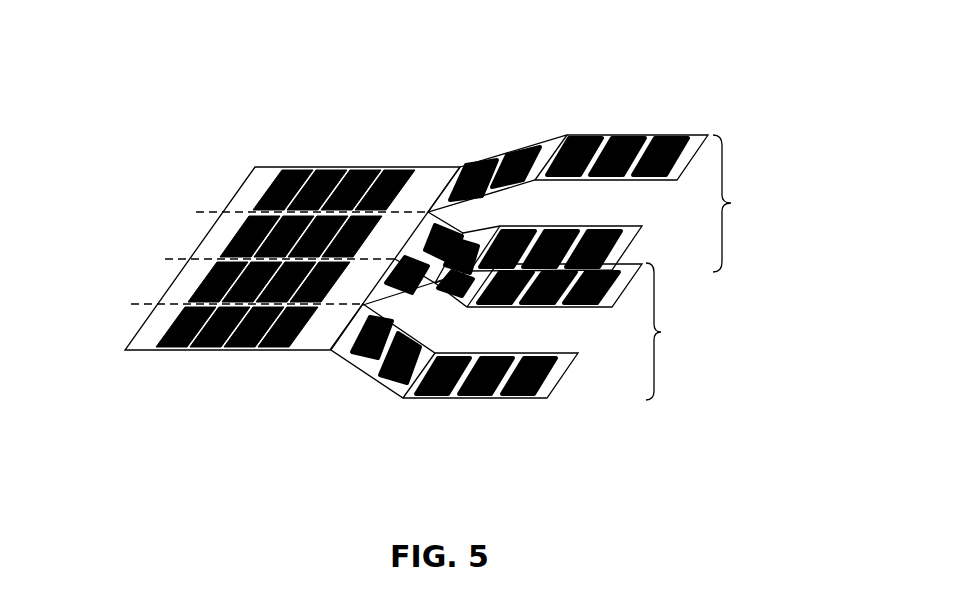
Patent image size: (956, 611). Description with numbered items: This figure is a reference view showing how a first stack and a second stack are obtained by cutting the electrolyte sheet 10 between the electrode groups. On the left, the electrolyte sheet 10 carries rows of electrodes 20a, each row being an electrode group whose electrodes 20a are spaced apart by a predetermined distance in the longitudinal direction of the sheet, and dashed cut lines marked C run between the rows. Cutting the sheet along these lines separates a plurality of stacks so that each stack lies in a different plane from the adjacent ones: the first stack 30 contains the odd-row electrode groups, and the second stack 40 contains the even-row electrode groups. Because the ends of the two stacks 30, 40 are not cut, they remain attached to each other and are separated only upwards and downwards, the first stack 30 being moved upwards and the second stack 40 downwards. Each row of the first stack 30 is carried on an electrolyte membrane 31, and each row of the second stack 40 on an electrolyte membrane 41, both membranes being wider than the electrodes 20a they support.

The electrolyte sheet 10 is at (265, 173).
The electrode 20a is at (367, 168).
The first stack 30 is at (579, 178).
The electrolyte membrane 31 is at (698, 142).
The second stack 40 is at (513, 365).
The electrolyte membrane 41 is at (551, 388).